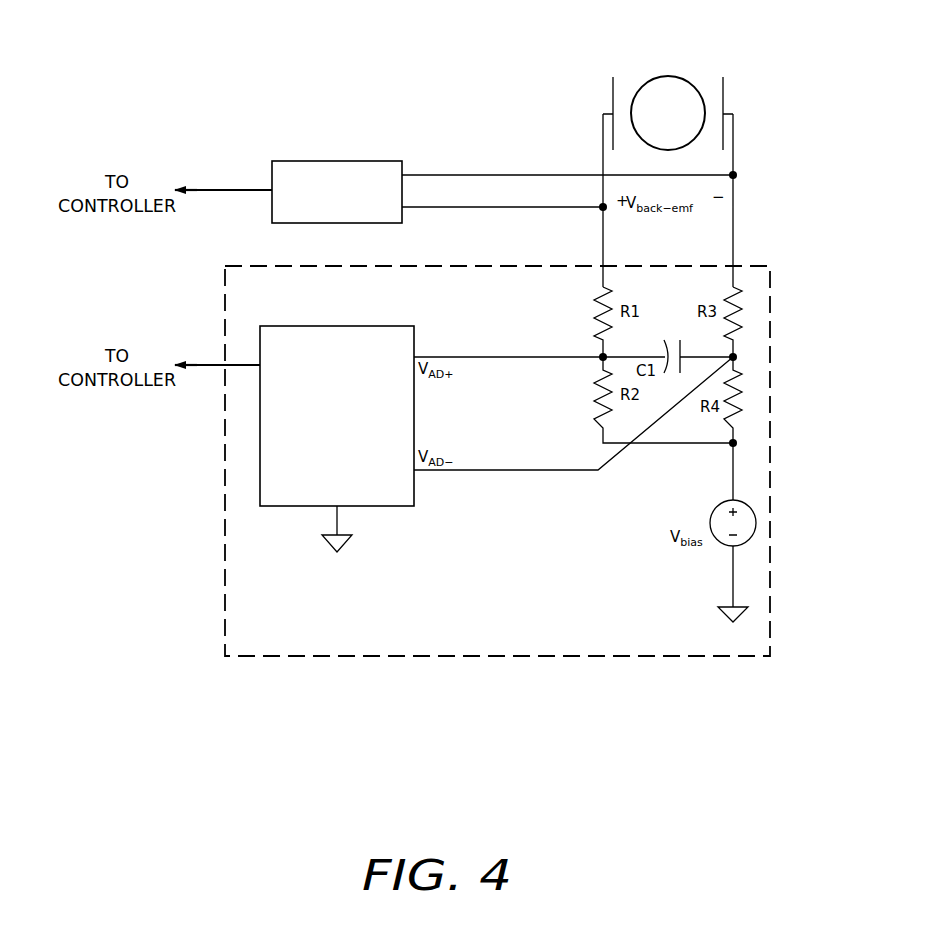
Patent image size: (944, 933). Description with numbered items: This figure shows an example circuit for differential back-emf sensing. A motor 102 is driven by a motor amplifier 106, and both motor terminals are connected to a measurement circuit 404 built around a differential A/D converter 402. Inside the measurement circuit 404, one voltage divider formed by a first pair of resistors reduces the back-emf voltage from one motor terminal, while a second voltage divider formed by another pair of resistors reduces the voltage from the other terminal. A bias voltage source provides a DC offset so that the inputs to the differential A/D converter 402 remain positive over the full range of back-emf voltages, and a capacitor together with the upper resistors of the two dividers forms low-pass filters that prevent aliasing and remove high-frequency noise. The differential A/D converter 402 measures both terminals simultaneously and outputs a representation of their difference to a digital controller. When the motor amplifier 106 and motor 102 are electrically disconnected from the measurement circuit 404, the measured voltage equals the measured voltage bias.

The motor 102 is at (682, 56).
The motor amplifier 106 is at (358, 160).
The differential A/D converter 402 is at (365, 325).
The measurement circuit 404 is at (771, 343).